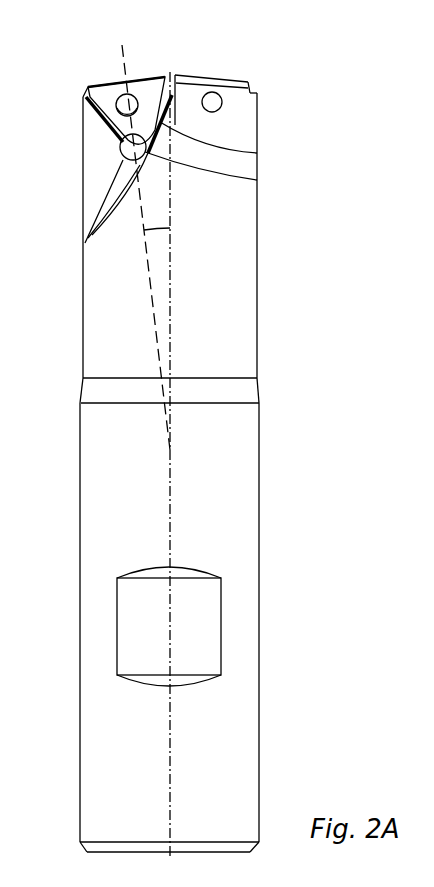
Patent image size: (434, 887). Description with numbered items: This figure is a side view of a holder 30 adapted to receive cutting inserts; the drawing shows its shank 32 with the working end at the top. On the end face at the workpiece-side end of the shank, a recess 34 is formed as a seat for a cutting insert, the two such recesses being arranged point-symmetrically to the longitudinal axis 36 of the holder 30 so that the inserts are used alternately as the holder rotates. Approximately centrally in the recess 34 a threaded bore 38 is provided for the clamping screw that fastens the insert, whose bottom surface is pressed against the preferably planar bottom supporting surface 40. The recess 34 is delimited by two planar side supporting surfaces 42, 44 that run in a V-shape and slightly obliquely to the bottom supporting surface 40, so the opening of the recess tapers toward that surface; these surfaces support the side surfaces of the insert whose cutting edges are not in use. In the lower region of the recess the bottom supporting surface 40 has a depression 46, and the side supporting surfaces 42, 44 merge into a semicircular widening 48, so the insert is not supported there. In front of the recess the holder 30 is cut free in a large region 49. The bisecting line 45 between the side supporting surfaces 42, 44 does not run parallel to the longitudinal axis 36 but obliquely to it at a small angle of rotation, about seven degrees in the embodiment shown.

The holder 30 is at (304, 91).
The shank 32 is at (250, 490).
The recess 34 is at (137, 70).
The longitudinal axis 36 is at (173, 320).
The threaded bore 38 is at (120, 100).
The bottom supporting surface 40 is at (148, 88).
The side supporting surface 42 is at (96, 122).
The side supporting surface 44 is at (257, 153).
The bisecting line 45 is at (148, 288).
The depression 46 is at (257, 180).
The widening 48 is at (130, 158).
The region 49 is at (98, 163).